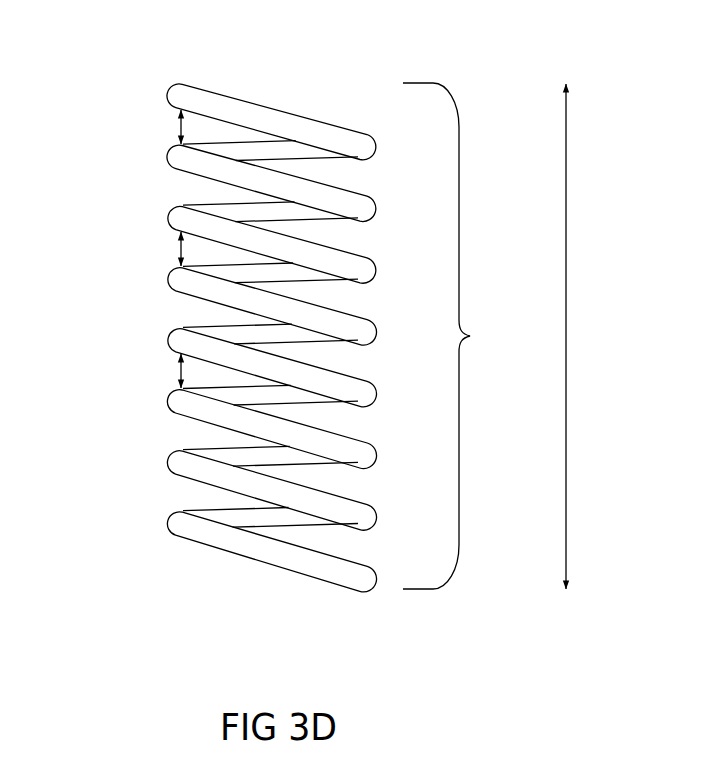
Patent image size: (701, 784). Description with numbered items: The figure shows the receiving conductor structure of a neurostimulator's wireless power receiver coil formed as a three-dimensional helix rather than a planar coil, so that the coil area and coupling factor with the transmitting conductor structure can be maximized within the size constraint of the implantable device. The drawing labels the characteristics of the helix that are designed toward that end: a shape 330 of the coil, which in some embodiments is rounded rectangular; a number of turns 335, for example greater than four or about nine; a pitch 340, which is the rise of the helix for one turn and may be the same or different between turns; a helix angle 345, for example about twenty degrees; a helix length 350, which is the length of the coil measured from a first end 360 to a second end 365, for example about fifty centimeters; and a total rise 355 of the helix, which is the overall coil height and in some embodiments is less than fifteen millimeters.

The shape 330 is at (463, 336).
The number of turns 335 is at (220, 333).
The pitch 340 is at (180, 125).
The helix angle 345 is at (263, 203).
The helix length 350 is at (266, 333).
The total rise 355 is at (593, 336).
The first end 360 is at (181, 85).
The second end 365 is at (361, 591).